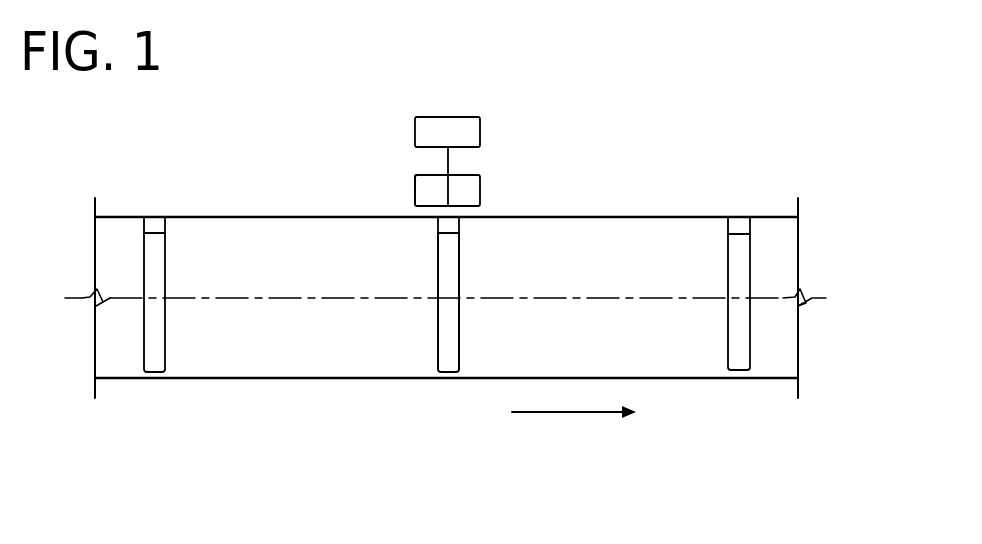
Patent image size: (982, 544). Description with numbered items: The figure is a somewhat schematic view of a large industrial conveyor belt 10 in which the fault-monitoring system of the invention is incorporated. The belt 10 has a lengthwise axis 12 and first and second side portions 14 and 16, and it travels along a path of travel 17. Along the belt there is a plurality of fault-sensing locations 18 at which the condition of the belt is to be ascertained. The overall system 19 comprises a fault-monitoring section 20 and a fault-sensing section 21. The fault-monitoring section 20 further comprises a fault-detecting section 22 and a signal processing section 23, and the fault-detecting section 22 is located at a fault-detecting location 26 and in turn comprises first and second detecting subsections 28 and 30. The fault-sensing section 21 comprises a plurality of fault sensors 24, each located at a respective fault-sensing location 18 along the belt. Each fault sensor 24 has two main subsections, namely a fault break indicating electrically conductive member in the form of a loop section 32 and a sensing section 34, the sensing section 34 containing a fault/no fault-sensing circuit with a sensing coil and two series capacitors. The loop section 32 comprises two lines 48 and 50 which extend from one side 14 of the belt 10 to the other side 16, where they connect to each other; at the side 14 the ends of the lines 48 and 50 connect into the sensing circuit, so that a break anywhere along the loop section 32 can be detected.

The conveyor belt 10 is at (445, 282).
The lengthwise axis 12 is at (308, 298).
The first side portion 14 is at (270, 217).
The second side portion 16 is at (232, 378).
The path of travel 17 is at (547, 413).
The fault-sensing location 18 is at (158, 247).
The overall system 19 is at (463, 137).
The fault-monitoring section 20 is at (463, 137).
The fault-sensing section 21 is at (437, 389).
The fault-detecting section 22 is at (424, 170).
The signal processing section 23 is at (478, 122).
The fault sensor 24 is at (464, 308).
The fault-detecting location 26 is at (407, 207).
The first detecting subsection 28 is at (417, 188).
The second detecting subsection 30 is at (472, 183).
The loop section 32 is at (500, 308).
The sensing section 34 is at (459, 225).
The line 48 is at (438, 335).
The line 50 is at (459, 337).